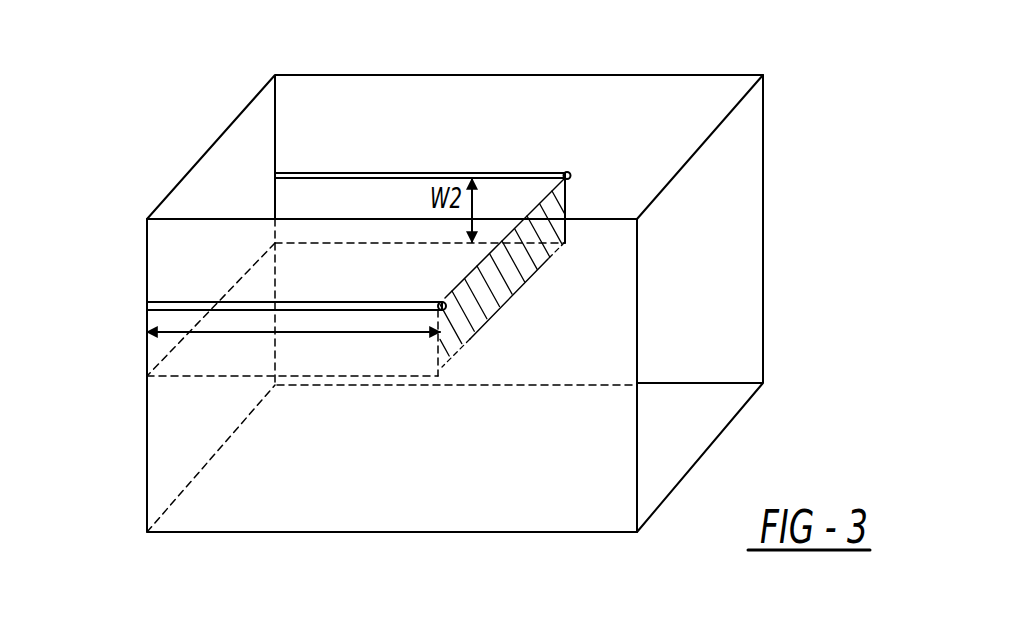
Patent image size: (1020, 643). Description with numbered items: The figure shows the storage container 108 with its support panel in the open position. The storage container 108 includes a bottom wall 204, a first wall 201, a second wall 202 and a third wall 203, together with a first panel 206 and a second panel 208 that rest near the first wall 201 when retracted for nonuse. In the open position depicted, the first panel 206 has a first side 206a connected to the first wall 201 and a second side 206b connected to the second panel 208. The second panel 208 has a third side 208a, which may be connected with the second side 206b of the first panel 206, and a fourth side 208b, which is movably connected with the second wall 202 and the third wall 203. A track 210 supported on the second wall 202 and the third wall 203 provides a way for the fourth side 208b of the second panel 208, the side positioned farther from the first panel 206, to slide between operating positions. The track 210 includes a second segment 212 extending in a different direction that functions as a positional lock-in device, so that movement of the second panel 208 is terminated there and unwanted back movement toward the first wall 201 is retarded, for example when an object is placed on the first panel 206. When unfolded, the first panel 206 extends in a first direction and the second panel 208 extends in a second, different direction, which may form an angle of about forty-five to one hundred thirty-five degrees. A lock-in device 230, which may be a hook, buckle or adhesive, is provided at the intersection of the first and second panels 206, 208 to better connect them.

The storage container 108 is at (200, 560).
The first wall 201 is at (236, 153).
The second wall 202 is at (163, 249).
The third wall 203 is at (688, 113).
The bottom wall 204 is at (660, 442).
The first panel 206 is at (342, 343).
The first side 206a is at (183, 347).
The second side 206b is at (465, 345).
The second panel 208 is at (513, 258).
The third side 208a is at (537, 270).
The fourth side 208b is at (538, 207).
The track 210 is at (462, 173).
The second segment 212 is at (568, 182).
The lock-in device 230 is at (440, 375).